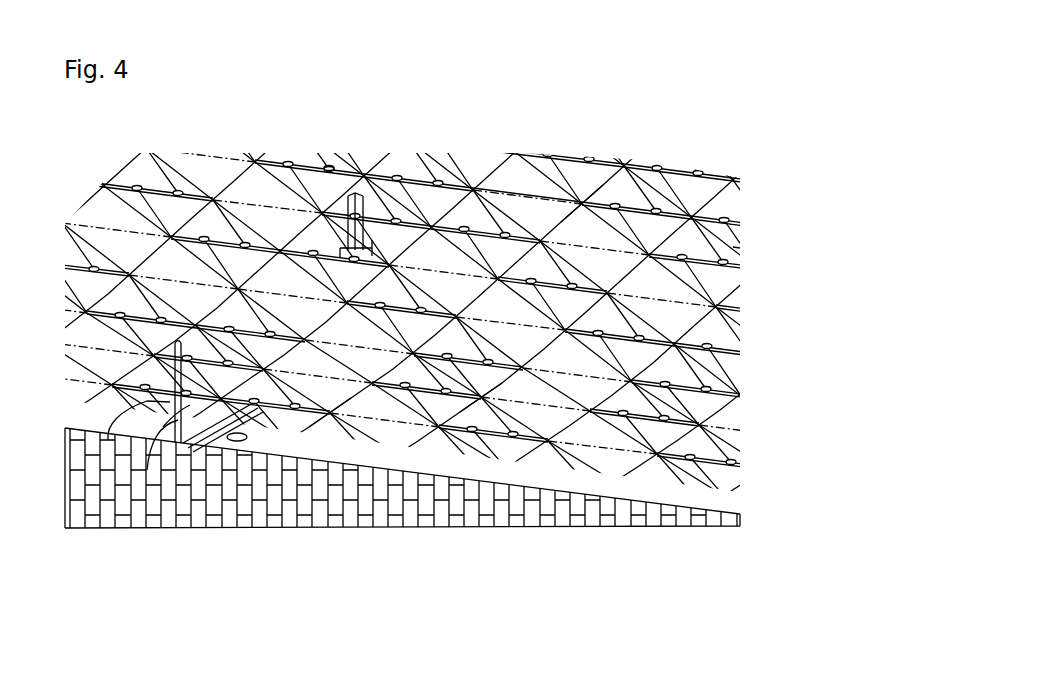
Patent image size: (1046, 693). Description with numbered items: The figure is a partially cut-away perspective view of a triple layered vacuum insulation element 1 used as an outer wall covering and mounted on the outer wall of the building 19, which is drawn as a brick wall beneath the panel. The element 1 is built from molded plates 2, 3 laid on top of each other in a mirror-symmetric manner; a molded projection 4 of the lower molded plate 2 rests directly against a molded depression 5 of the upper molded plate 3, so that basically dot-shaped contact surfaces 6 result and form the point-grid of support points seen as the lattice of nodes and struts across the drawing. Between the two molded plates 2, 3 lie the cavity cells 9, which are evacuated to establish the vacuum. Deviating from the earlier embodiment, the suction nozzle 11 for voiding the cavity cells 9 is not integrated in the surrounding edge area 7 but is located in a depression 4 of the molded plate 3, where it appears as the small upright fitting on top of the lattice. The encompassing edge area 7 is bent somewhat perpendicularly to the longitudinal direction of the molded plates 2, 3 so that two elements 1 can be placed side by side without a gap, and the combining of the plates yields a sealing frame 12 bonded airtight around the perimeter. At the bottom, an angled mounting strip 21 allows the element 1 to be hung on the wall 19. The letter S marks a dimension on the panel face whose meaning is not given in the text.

The vacuum insulation element 1 is at (728, 107).
The lower molded plate 2 is at (108, 440).
The upper molded plate 3 is at (470, 375).
The molded projection 4 is at (475, 188).
The molded depression 5 is at (577, 185).
The contact surface 6 is at (331, 166).
The edge area 7 is at (180, 443).
The cavity cells 9 is at (335, 425).
The suction nozzle 11 is at (354, 192).
The sealing frame 12 is at (163, 427).
The outer wall of the building 19 is at (532, 503).
The angled mounting strip 21 is at (203, 440).
The spacing S is at (735, 248).